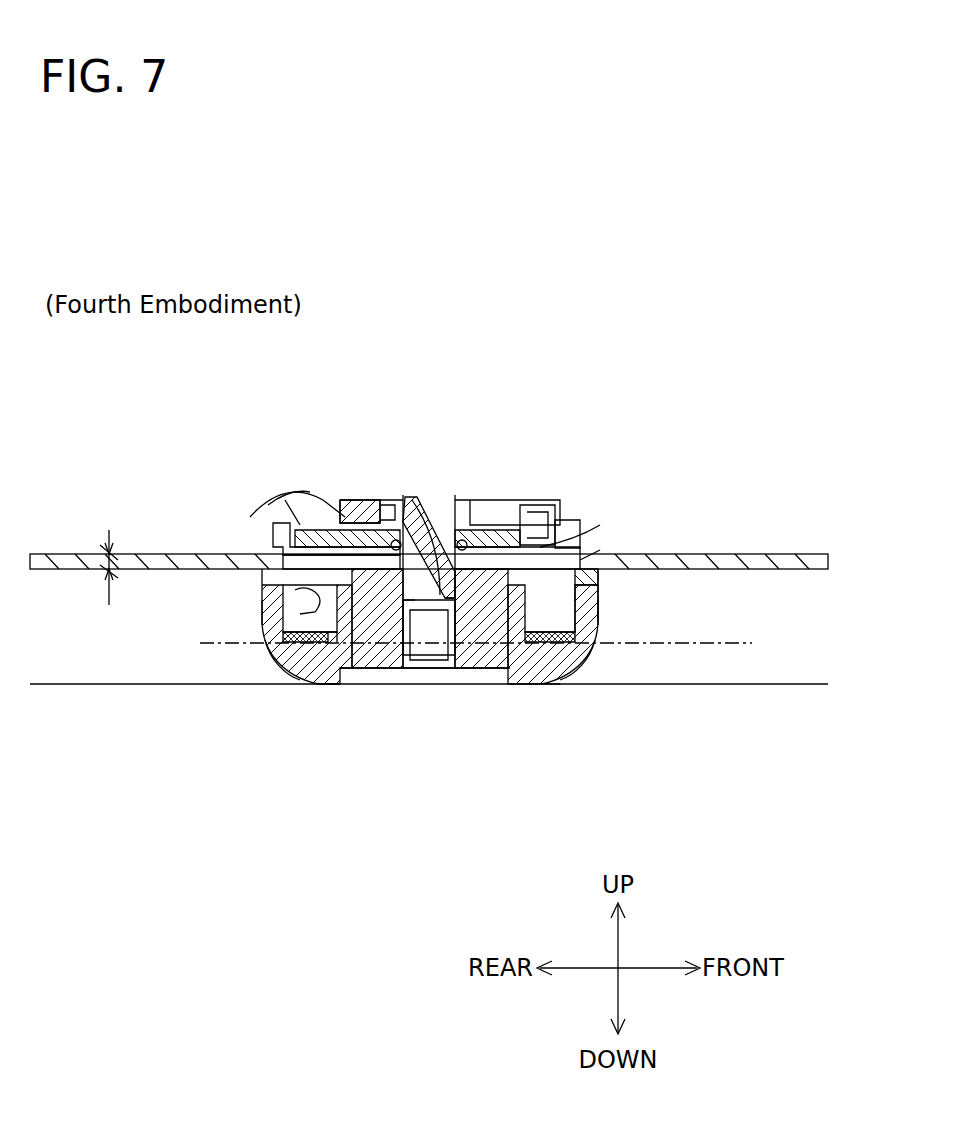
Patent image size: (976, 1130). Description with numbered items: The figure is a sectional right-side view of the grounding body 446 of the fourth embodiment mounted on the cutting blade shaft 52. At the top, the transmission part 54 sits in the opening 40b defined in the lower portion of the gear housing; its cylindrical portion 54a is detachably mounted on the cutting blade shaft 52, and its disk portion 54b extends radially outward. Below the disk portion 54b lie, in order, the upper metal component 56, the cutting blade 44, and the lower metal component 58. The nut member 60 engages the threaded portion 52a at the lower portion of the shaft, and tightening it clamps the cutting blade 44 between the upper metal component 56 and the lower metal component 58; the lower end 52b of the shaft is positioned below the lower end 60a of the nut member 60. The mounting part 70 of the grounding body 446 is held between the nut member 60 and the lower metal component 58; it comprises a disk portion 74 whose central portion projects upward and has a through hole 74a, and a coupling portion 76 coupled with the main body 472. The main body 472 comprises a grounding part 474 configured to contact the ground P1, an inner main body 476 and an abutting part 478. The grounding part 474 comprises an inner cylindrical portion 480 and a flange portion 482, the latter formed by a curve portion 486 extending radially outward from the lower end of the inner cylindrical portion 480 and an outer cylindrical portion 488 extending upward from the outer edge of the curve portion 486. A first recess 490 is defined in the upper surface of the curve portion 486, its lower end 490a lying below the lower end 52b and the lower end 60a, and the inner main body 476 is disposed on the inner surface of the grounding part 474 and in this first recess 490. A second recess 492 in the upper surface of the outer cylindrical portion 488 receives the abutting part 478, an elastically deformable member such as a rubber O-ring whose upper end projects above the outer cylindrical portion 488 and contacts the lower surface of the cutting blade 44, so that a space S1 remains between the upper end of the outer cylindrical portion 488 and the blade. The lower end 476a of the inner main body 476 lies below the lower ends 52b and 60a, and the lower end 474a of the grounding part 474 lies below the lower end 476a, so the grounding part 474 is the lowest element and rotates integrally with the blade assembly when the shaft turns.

The opening 40b is at (280, 497).
The cutting blade 44 is at (795, 568).
The grounding body 446 is at (318, 692).
The main body 472 is at (285, 688).
The grounding part 474 is at (302, 690).
The lower end of the grounding part 474a is at (330, 690).
The inner main body 476 is at (600, 633).
The lower end of the inner main body 476a is at (560, 684).
The abutting part 478 is at (600, 572).
The inner cylindrical portion 480 is at (520, 675).
The flange portion 482 is at (557, 686).
The curve portion 486 is at (600, 653).
The outer cylindrical portion 488 is at (600, 610).
The first recess 490 is at (270, 645).
The lower end of the first recess 490a is at (280, 682).
The second recess 492 is at (596, 588).
The cutting blade shaft 52 is at (438, 505).
The threaded portion 52a is at (428, 665).
The lower end of the cutting blade shaft 52b is at (425, 660).
The transmission part 54 is at (527, 503).
The cylindrical portion 54a is at (487, 503).
The disk portion 54b is at (562, 520).
The upper metal component 56 is at (590, 522).
The lower metal component 58 is at (600, 548).
The nut member 60 is at (460, 662).
The lower end of the nut member 60a is at (380, 658).
The mounting part 70 is at (260, 563).
The disk portion 74 is at (325, 598).
The through hole 74a is at (408, 505).
The coupling portion 76 is at (290, 618).
The ground P1 is at (812, 684).
The space S1 is at (108, 575).